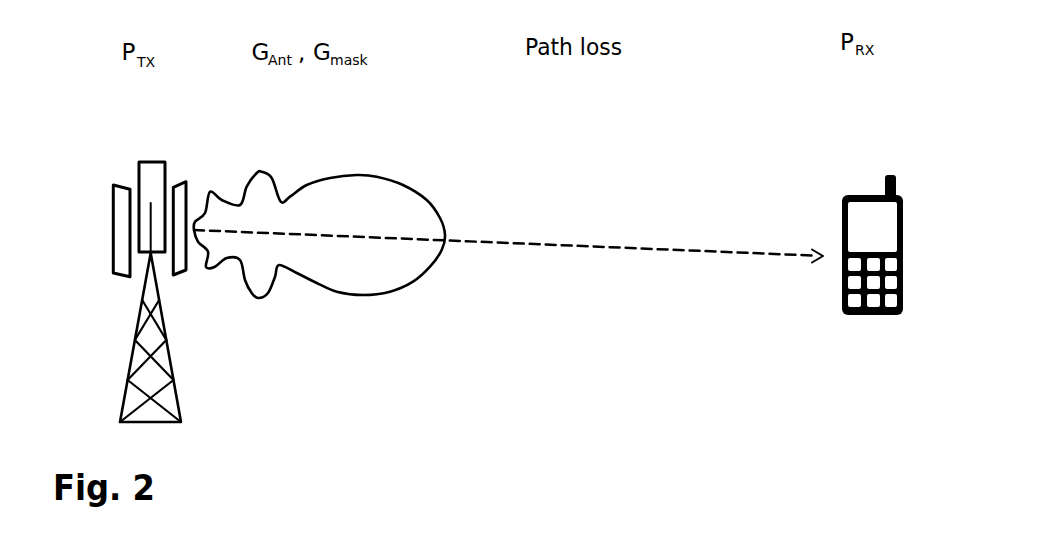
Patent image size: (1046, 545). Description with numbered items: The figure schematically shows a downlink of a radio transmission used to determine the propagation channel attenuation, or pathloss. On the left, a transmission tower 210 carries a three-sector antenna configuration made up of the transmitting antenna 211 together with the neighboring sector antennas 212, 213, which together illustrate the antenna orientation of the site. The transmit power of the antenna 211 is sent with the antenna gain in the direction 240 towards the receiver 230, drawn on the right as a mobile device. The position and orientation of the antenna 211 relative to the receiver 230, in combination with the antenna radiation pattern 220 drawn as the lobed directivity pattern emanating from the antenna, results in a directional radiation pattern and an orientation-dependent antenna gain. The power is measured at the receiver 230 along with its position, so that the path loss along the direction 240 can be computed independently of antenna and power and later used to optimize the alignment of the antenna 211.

The base station antenna tower 210 is at (180, 392).
The antenna 211 is at (188, 187).
The transmit antenna 212 is at (148, 170).
The antenna panel (left) 213 is at (112, 200).
The antenna radiation pattern 220 is at (387, 295).
The receiver 230 is at (842, 298).
The direction 240 is at (603, 247).